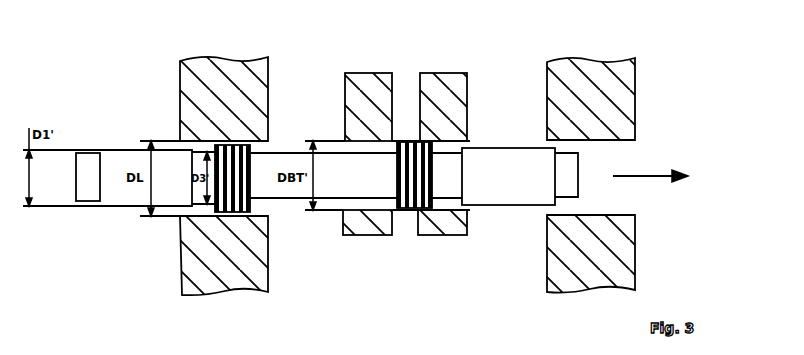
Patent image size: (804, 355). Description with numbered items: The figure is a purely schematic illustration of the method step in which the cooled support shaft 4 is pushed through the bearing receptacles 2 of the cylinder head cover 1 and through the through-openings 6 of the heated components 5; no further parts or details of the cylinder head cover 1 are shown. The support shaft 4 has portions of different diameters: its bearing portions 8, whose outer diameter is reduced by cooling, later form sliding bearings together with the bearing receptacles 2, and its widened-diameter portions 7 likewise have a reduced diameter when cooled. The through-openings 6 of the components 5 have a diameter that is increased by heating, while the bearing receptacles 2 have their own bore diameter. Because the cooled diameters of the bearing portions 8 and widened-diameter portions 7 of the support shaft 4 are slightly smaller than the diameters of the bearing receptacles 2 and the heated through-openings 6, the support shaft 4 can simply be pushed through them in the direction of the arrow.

The cylinder head cover 1 is at (612, 98).
The bearing receptacles 2 is at (262, 144).
The support shaft 4 is at (88, 165).
The components 5 is at (356, 97).
The through-openings 6 is at (352, 137).
The widened-diameter portions 7 is at (252, 203).
The bearing portions 8 is at (120, 161).